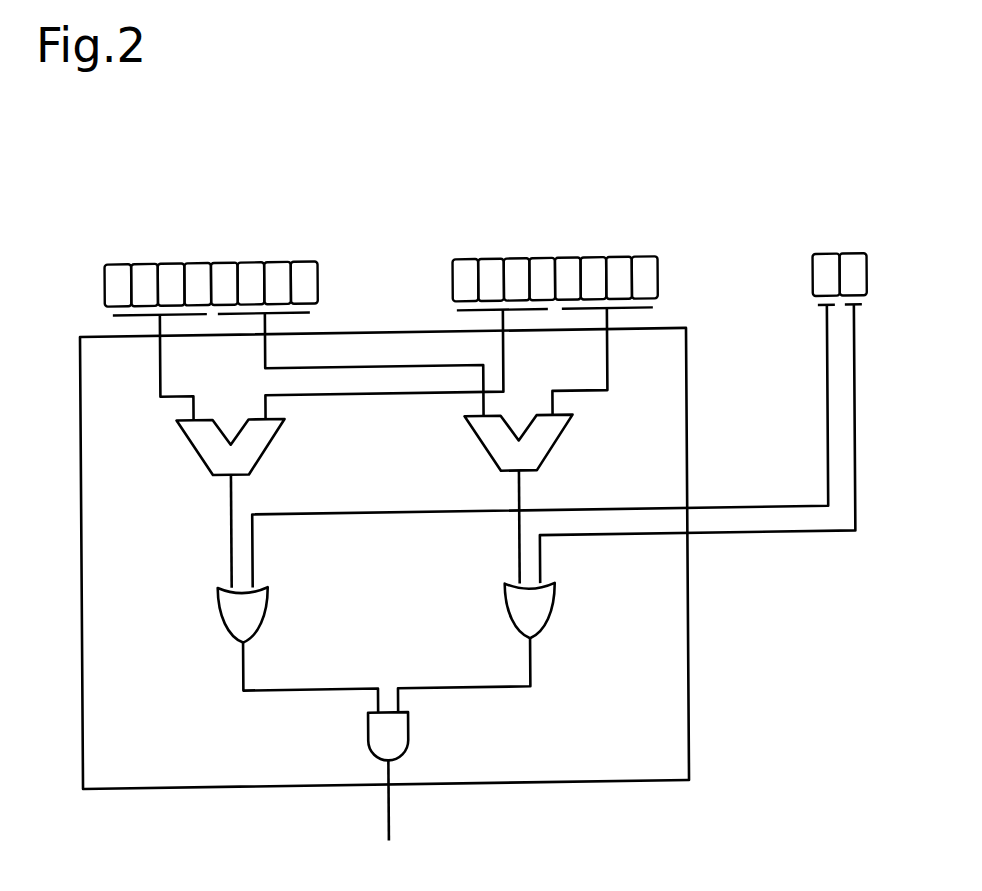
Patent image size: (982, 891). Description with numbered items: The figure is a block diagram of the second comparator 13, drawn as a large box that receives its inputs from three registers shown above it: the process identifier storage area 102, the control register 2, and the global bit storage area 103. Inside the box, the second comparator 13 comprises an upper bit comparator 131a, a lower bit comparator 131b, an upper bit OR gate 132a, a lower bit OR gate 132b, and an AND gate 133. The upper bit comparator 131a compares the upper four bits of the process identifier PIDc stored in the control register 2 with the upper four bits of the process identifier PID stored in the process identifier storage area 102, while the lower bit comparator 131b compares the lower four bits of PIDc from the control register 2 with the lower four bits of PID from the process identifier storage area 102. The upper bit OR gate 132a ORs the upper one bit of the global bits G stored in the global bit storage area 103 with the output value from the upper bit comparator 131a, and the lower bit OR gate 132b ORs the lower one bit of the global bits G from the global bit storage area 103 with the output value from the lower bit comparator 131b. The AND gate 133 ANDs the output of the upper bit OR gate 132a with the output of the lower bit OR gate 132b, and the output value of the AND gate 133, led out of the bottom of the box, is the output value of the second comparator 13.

The second comparator 13 is at (686, 680).
The process identifier storage area 102 is at (203, 265).
The control register 2 is at (543, 267).
The global bit storage area 103 is at (829, 264).
The upper bit comparator 131a is at (259, 451).
The lower bit comparator 131b is at (547, 454).
The upper bit OR gate 132a is at (260, 626).
The lower bit OR gate 132b is at (546, 625).
The AND gate 133 is at (407, 743).